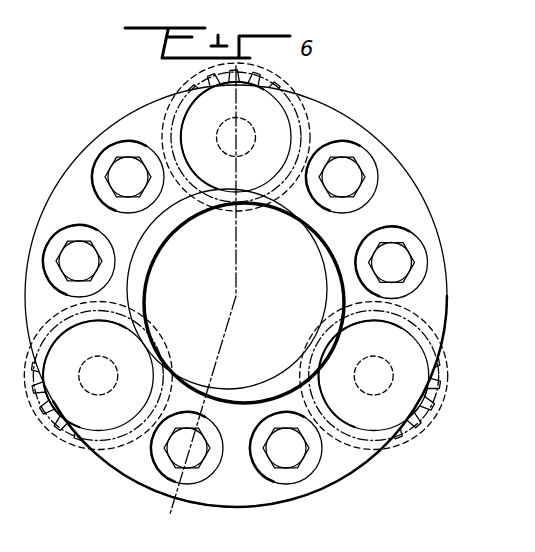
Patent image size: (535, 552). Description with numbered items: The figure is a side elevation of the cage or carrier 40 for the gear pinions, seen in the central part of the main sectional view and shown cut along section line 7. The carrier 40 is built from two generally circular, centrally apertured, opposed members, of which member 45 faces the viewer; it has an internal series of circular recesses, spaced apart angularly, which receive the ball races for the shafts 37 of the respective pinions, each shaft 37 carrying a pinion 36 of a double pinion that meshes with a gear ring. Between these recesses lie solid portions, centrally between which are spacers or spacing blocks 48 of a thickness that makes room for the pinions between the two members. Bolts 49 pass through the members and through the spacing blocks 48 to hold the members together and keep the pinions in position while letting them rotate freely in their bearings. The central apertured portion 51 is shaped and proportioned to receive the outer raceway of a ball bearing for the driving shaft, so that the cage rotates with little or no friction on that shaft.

The section line 7- 7 is at (166, 509).
The pinion 36 is at (262, 80).
The shaft 37 is at (254, 125).
The cage or carrier 40 is at (437, 233).
The opposed member 45 is at (428, 300).
The spacing block 48 is at (307, 132).
The bolt 49 is at (79, 258).
The central apertured portion 51 is at (262, 232).